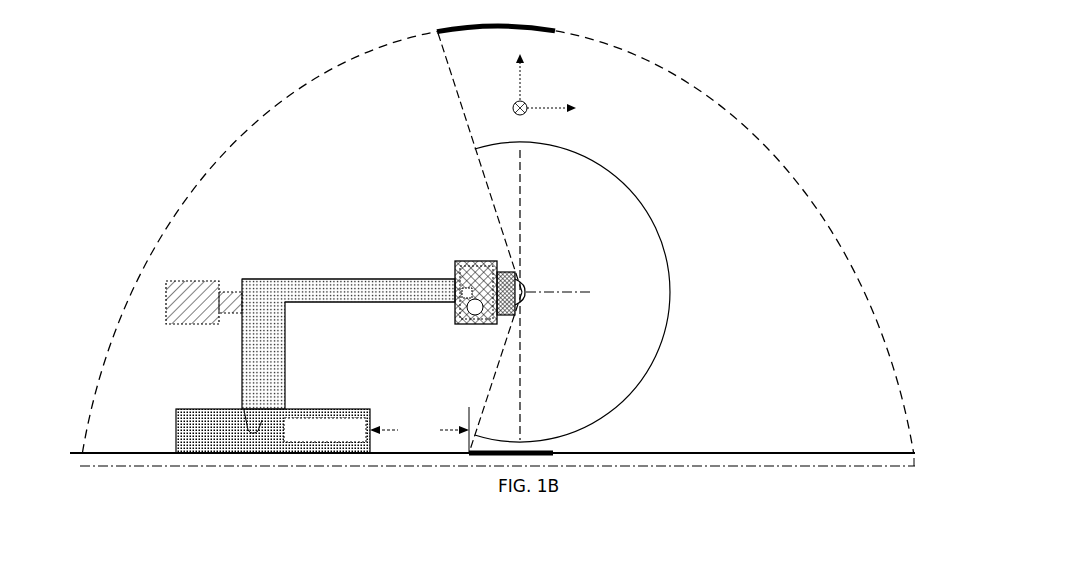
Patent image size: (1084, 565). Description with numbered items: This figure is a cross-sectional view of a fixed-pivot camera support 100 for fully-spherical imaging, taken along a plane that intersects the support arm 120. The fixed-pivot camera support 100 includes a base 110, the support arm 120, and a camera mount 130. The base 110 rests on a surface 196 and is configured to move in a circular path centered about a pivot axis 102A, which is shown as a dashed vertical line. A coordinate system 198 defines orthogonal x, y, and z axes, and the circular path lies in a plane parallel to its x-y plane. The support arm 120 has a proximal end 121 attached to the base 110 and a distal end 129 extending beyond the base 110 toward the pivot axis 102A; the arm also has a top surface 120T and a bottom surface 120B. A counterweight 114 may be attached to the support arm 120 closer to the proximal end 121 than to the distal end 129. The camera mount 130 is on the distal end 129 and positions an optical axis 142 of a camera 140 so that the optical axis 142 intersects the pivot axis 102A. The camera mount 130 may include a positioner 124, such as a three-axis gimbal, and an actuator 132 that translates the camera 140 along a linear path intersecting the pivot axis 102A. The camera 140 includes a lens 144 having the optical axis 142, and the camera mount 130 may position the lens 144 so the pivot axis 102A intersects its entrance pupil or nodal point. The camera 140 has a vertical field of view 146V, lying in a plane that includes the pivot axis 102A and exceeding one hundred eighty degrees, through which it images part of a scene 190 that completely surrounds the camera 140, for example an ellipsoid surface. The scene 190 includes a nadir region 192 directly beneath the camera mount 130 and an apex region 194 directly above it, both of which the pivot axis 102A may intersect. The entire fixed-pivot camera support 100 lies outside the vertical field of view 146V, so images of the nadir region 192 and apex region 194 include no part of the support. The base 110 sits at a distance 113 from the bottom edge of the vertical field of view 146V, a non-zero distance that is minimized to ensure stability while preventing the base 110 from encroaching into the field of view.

The fixed-pivot camera support 100 is at (306, 207).
The pivot axis 102A is at (522, 210).
The base 110 is at (362, 440).
The distance 113 is at (419, 429).
The counterweight 114 is at (208, 312).
The support arm 120 is at (280, 312).
The top surface 120T is at (390, 280).
The bottom surface 120B is at (392, 303).
The proximal end 121 is at (262, 414).
The positioner 124 is at (486, 268).
The distal end 129 is at (482, 316).
The camera mount 130 is at (487, 325).
The actuator 132 is at (476, 268).
The camera 140 is at (519, 311).
The optical axis 142 is at (542, 294).
The lens 144 is at (522, 284).
The vertical field of view 146V is at (584, 292).
The scene 190 is at (266, 112).
The nadir region 192 is at (553, 452).
The apex region 194 is at (487, 27).
The surface 196 is at (808, 452).
The coordinate system 198 is at (544, 83).